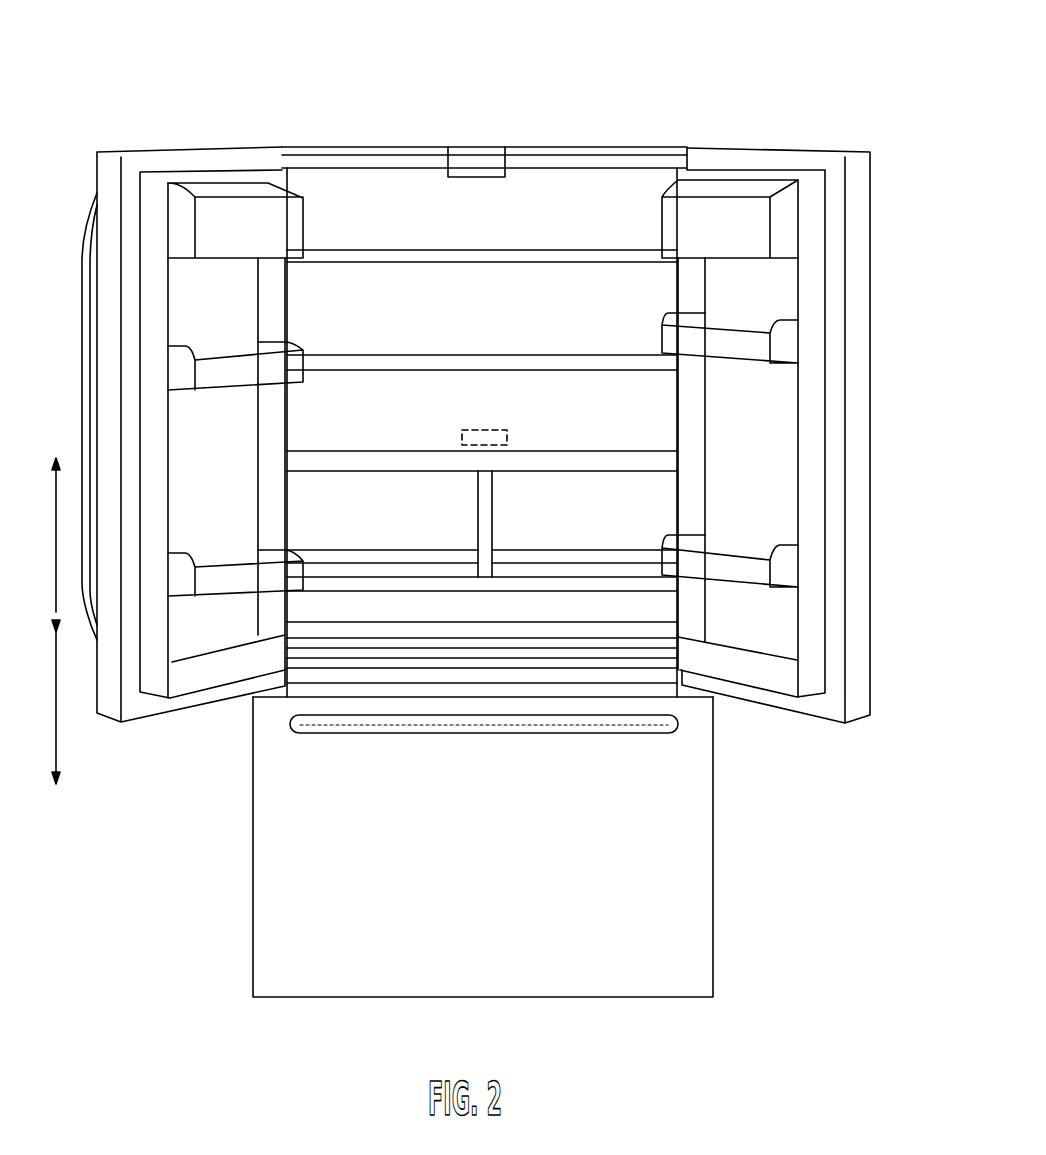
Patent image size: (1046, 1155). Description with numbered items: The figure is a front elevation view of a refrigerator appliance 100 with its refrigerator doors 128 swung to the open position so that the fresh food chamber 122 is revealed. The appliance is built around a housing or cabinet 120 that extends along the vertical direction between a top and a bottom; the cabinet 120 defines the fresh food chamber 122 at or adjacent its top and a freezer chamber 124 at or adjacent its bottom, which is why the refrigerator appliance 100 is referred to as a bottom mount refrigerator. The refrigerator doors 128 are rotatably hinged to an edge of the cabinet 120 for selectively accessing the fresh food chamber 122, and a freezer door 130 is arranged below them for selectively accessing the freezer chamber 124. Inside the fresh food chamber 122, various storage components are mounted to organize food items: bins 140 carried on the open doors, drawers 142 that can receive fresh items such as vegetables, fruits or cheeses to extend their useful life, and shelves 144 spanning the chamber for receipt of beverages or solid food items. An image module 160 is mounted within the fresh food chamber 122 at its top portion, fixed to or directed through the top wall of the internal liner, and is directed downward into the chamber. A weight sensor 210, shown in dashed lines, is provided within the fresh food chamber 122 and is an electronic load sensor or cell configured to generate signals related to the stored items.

The refrigerator appliance 100 is at (688, 76).
The fresh food chamber 122 is at (594, 182).
The refrigerator doors 128 is at (195, 160).
The image module 160 is at (480, 177).
The shelves 144 is at (481, 256).
The weight sensor 210 is at (484, 428).
The drawers 142 is at (515, 570).
The bins 140 is at (255, 578).
The cabinet 120 is at (713, 693).
The freezer chamber 124 is at (686, 902).
The freezer door 130 is at (283, 911).